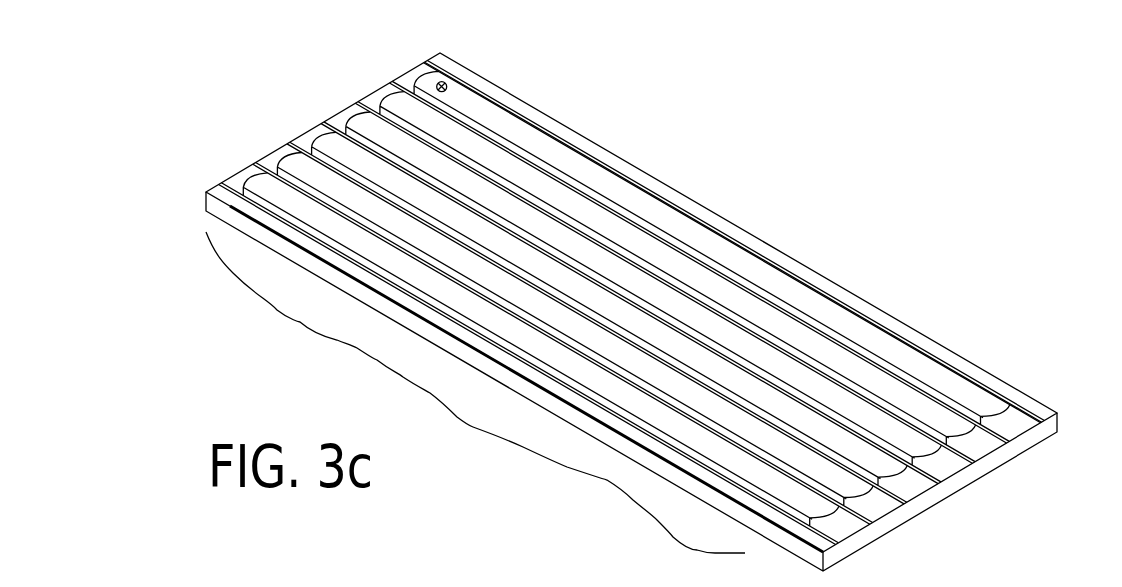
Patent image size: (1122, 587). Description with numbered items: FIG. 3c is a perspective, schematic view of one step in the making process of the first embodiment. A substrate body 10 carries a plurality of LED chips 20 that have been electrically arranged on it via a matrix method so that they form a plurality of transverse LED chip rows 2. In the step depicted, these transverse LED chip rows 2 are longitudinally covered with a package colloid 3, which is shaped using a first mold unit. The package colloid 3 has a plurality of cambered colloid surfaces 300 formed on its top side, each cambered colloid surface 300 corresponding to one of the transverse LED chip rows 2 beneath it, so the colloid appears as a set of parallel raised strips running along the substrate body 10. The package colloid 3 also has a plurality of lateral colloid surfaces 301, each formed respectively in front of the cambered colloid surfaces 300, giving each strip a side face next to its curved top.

The substrate body 10 is at (918, 338).
The package colloid 3 is at (632, 299).
The cambered colloid surfaces 300 is at (572, 162).
The lateral colloid surfaces 301 is at (545, 163).
The LED chip 20 is at (455, 80).
The transverse LED chip rows 2 is at (475, 392).